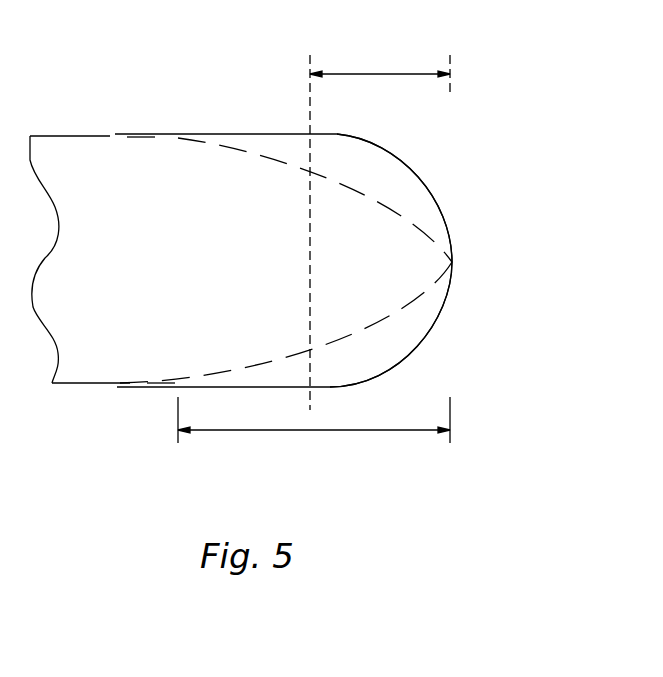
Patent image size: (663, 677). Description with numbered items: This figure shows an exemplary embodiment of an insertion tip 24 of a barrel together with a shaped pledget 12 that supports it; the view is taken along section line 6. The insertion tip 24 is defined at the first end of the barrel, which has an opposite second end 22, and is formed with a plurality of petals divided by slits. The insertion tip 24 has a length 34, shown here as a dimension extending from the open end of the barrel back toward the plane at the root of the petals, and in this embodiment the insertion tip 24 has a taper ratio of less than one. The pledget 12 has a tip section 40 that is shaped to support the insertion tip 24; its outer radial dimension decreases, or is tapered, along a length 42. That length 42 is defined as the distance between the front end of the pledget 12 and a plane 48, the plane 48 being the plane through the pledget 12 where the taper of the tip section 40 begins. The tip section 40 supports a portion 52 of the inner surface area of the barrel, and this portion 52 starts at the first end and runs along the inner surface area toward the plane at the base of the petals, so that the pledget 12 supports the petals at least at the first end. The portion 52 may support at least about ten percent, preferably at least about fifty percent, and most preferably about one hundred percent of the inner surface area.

The section line 6 is at (52, 136).
The pledget 12 is at (103, 136).
The second end 22 is at (448, 234).
The insertion tip 24 is at (397, 153).
The length 34 is at (376, 74).
The tip section 40 is at (355, 191).
The length 42 is at (317, 430).
The plane 48 is at (177, 413).
The portion 52 is at (452, 262).